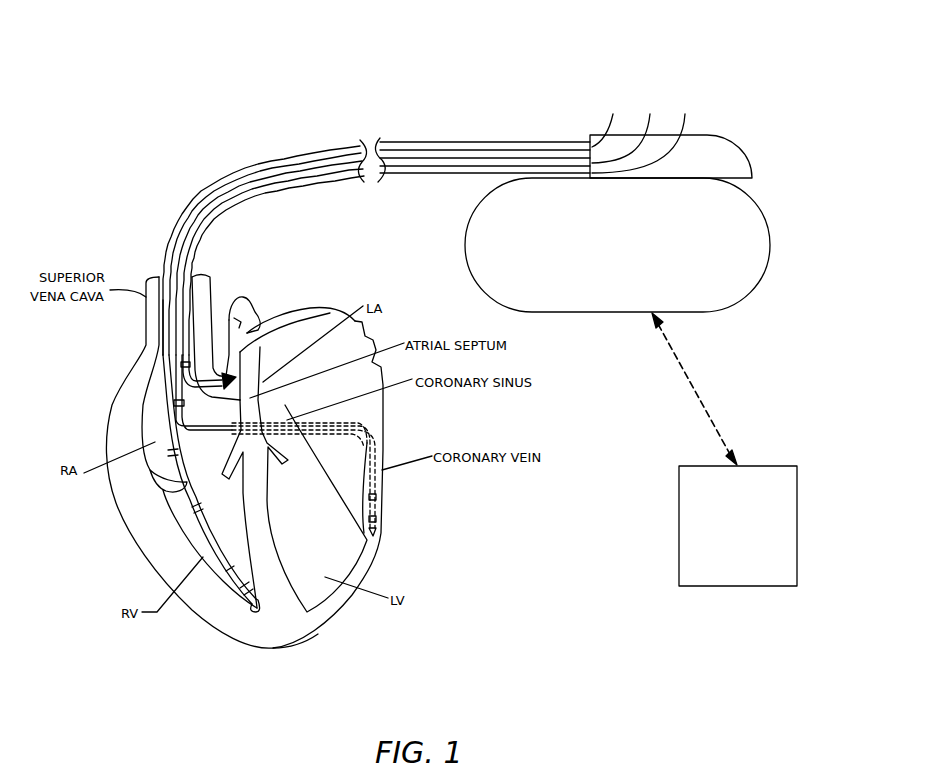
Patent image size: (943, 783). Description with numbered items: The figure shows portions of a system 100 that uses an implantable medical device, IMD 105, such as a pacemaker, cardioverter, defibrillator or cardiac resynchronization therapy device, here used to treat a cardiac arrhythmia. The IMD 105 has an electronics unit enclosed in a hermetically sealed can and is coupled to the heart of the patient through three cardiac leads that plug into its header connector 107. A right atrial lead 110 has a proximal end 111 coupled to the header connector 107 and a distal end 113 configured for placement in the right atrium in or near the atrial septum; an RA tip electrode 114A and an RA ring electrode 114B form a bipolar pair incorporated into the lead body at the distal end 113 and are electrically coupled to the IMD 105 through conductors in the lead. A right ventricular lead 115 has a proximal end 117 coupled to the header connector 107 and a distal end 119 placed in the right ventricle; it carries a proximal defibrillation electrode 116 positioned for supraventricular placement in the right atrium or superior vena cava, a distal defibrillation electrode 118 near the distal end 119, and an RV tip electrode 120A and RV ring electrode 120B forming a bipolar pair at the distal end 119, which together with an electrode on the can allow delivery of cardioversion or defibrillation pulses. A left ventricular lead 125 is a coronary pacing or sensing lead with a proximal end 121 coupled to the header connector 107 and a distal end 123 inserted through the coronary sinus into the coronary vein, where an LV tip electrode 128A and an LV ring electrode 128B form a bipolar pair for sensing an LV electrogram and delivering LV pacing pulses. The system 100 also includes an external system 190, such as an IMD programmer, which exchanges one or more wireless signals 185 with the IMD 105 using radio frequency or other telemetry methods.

The system 100 is at (91, 57).
The IMD 105 is at (727, 311).
The header connector 107 is at (738, 149).
The right atrial lead 110 is at (402, 174).
The proximal end 111 is at (685, 114).
The distal end 113 is at (236, 376).
The RA tip electrode 114A is at (262, 350).
The RA ring electrode 114B is at (213, 367).
The right ventricular lead 115 is at (300, 156).
The proximal defibrillation electrode 116 is at (180, 403).
The proximal end 117 is at (613, 114).
The distal defibrillation electrode 118 is at (200, 534).
The distal end 119 is at (249, 616).
The RV tip electrode 120A is at (285, 647).
The RV ring electrode 120B is at (252, 613).
The proximal end 121 is at (650, 114).
The distal end 123 is at (374, 537).
The left ventricular lead 125 is at (250, 184).
The LV tip electrode 128A is at (380, 520).
The LV ring electrode 128B is at (376, 498).
The wireless signals 185 is at (697, 387).
The external system 190 is at (738, 588).